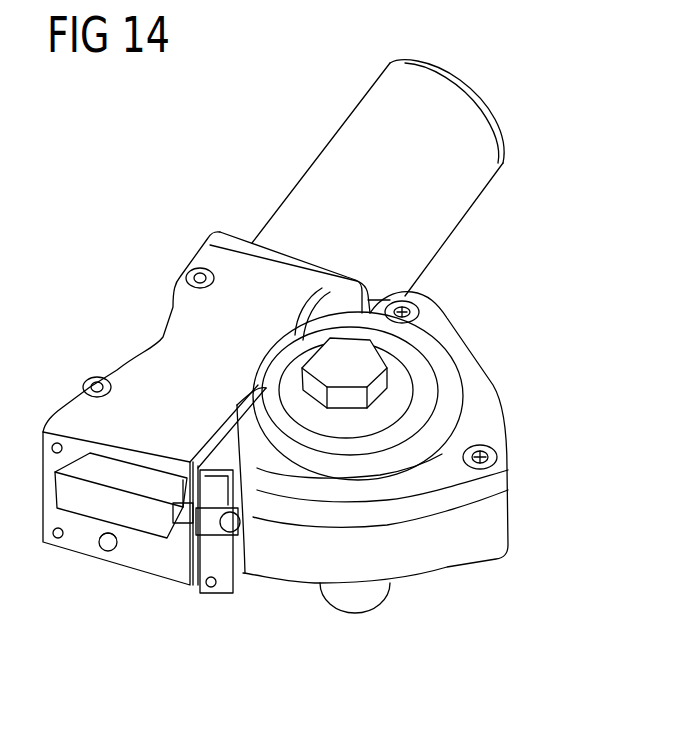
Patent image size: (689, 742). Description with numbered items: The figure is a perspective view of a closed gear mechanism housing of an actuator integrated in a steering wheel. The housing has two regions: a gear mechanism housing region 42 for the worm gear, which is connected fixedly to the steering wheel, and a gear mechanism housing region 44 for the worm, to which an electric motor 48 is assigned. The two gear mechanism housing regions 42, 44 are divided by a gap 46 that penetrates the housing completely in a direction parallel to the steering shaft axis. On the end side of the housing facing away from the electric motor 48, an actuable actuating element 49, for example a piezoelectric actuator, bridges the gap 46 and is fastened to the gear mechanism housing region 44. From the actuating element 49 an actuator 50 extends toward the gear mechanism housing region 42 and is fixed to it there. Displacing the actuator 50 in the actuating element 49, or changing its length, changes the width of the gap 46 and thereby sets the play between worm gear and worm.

The gear mechanism housing region 42 is at (483, 429).
The gear mechanism housing region 44 is at (172, 353).
The gap 46 is at (230, 415).
The electric motor 48 is at (340, 151).
The actuating element 49 is at (123, 482).
The actuator 50 is at (185, 515).